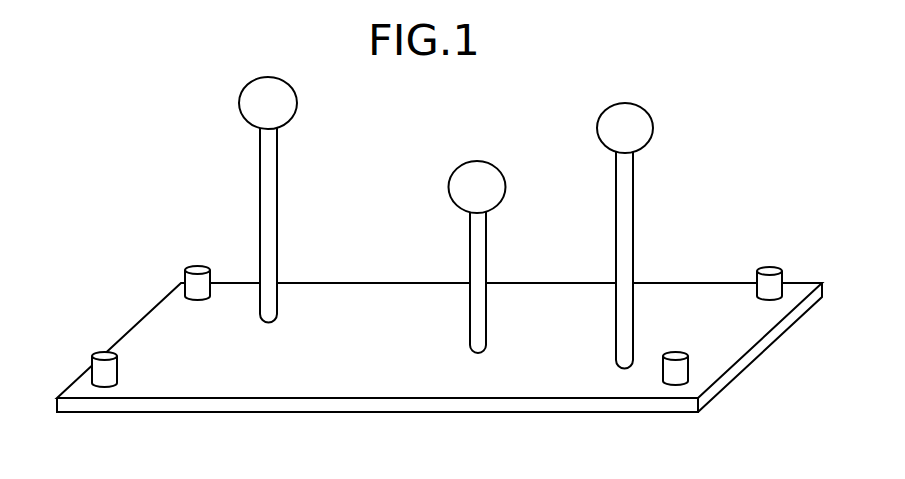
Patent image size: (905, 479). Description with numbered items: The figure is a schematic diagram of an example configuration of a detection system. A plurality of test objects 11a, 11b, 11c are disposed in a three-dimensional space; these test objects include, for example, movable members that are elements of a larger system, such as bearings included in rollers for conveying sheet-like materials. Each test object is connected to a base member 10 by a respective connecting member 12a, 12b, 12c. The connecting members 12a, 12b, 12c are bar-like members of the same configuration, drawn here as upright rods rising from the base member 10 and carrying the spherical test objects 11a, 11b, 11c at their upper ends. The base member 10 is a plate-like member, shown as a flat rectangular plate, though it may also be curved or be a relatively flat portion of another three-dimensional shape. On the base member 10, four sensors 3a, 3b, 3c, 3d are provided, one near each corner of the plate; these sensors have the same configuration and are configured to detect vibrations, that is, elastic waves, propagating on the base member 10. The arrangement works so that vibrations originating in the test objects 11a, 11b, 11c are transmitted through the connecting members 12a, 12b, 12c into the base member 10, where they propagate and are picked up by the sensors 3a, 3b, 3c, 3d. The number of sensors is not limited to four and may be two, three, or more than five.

The base member 10 is at (225, 413).
The test object 11a is at (297, 101).
The test object 11b is at (505, 186).
The test object 11c is at (653, 125).
The connecting member 12a is at (277, 163).
The connecting member 12b is at (486, 240).
The connecting member 12c is at (633, 197).
The sensor 3a is at (183, 279).
The sensor 3b is at (765, 266).
The sensor 3c is at (92, 363).
The sensor 3d is at (688, 368).